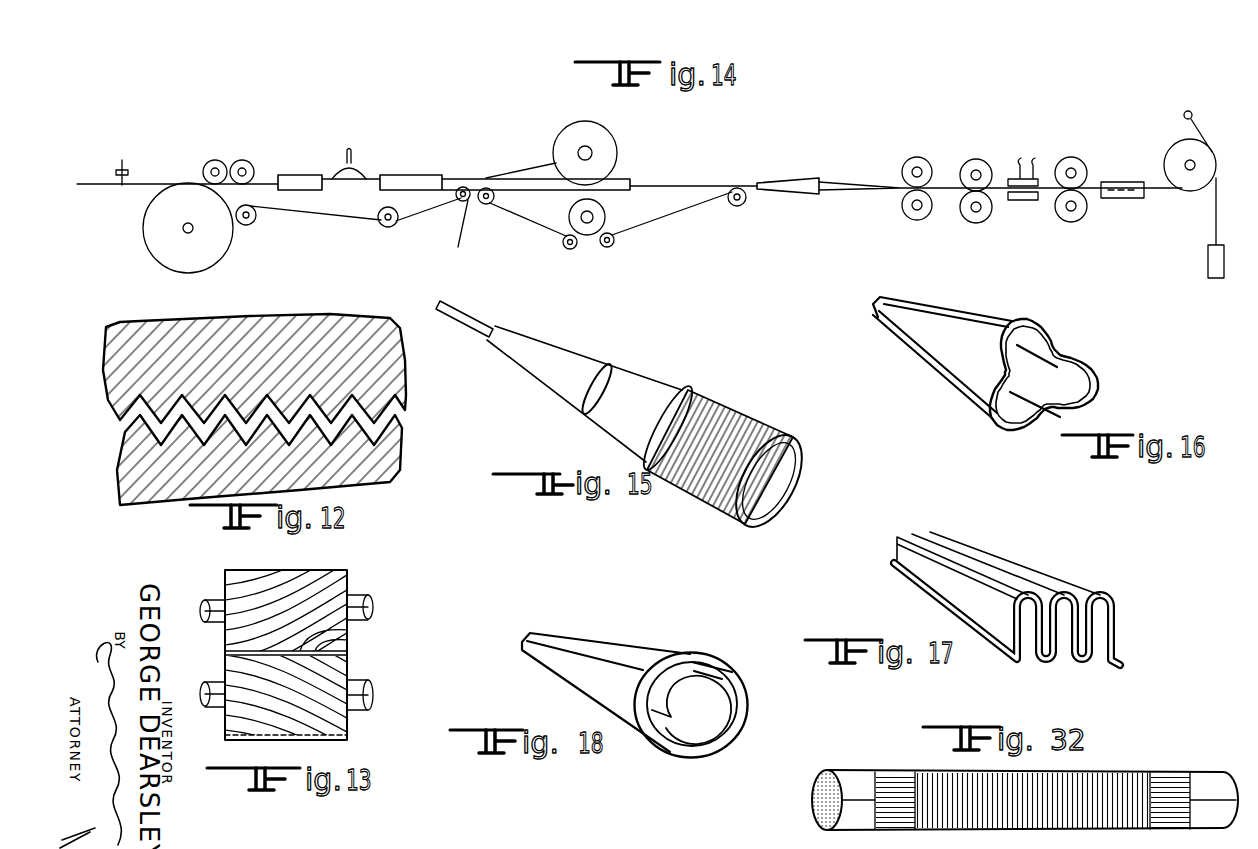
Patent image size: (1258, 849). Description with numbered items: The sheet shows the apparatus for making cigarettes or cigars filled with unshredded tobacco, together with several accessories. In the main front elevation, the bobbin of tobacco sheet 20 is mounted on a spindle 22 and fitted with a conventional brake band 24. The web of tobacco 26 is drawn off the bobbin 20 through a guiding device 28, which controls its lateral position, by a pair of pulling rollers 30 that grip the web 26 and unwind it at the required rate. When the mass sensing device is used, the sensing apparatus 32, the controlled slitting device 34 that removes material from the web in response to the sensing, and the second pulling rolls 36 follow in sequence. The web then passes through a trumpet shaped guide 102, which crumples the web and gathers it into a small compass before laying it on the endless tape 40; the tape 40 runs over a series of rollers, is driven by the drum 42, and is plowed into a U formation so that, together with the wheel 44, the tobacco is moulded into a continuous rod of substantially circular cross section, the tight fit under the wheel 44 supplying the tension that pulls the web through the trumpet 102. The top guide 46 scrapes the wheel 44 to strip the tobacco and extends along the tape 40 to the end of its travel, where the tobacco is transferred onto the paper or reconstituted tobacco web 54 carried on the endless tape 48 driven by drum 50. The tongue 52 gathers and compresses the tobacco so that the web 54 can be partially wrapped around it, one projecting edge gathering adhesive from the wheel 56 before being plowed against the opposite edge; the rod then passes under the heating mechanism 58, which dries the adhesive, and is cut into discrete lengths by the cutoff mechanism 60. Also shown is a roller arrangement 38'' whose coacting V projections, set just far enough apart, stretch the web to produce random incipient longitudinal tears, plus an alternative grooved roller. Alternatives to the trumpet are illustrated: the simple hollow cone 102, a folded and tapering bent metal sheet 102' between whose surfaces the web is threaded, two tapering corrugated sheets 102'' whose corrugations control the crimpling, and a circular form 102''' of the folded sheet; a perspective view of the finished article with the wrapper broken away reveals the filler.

In FIG. 14, the bobbin of tobacco sheet 20 is at (1204, 157).
In FIG. 14, the spindle 22 is at (1195, 166).
In FIG. 14, the brake band 24 is at (1216, 217).
In FIG. 14, the web of tobacco 26 is at (1155, 192).
In FIG. 14, the guiding device 28 is at (1122, 177).
In FIG. 14, the pulling rollers 30 is at (1072, 153).
In FIG. 14, the mass sensing device 32 is at (1026, 208).
In FIG. 14, the controlled slitting device 34 is at (974, 154).
In FIG. 14, the second pulling rolls 36 is at (916, 146).
In FIG. 12, the roller arrangement 38'' is at (254, 392).
In FIG. 14, the endless tape 40 is at (678, 222).
In FIG. 14, the drum 42 is at (606, 211).
In FIG. 14, the wheel 44 is at (606, 143).
In FIG. 14, the top guide 46 is at (530, 170).
In FIG. 14, the endless tape 48 is at (354, 224).
In FIG. 14, the drum 50 is at (192, 272).
In FIG. 14, the tongue 52 is at (413, 176).
In FIG. 14, the web 54 is at (465, 227).
In FIG. 14, the wheel 56 is at (352, 166).
In FIG. 14, the heating mechanism 58 is at (252, 163).
In FIG. 14, the cutoff mechanism 60 is at (122, 167).
In FIG. 14, the trumpet shaped guide 102 is at (788, 166).
In FIG. 15, the trumpet shaped guide 102 is at (625, 419).
In FIG. 16, the alternative trumpet 102' is at (979, 363).
In FIG. 17, the corrugated trumpet arrangement 102'' is at (1007, 598).
In FIG. 18, the circular alternative trumpet 102''' is at (635, 682).